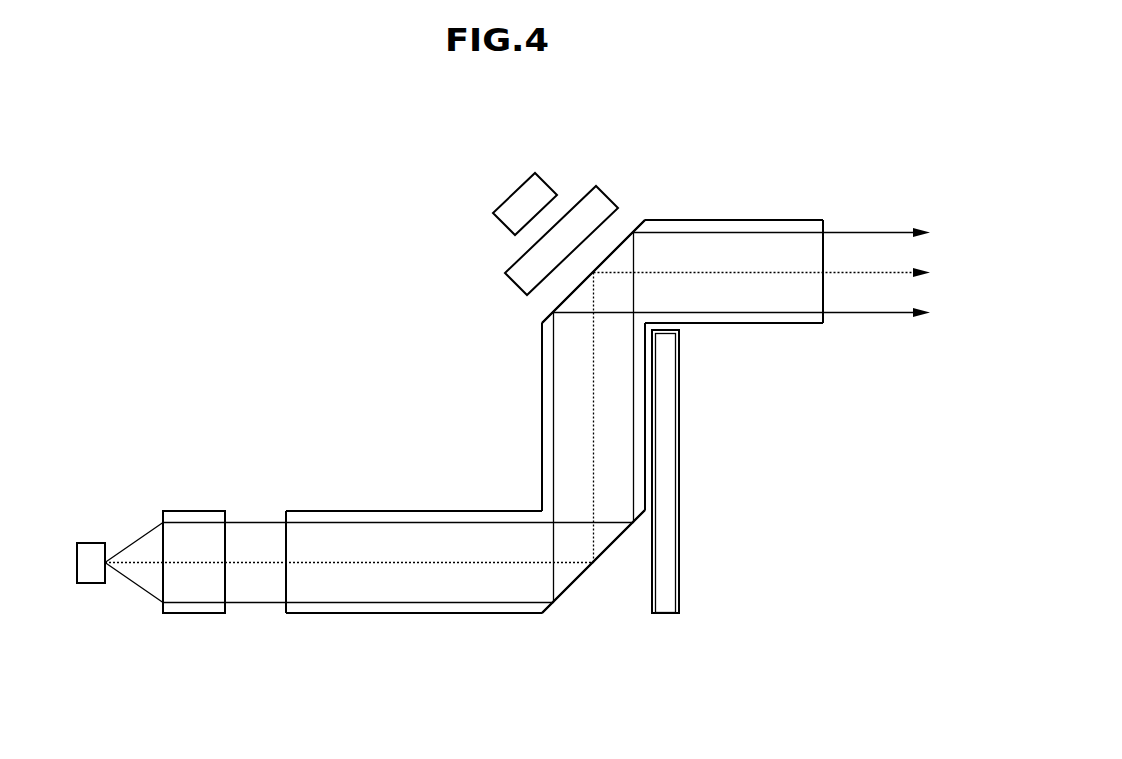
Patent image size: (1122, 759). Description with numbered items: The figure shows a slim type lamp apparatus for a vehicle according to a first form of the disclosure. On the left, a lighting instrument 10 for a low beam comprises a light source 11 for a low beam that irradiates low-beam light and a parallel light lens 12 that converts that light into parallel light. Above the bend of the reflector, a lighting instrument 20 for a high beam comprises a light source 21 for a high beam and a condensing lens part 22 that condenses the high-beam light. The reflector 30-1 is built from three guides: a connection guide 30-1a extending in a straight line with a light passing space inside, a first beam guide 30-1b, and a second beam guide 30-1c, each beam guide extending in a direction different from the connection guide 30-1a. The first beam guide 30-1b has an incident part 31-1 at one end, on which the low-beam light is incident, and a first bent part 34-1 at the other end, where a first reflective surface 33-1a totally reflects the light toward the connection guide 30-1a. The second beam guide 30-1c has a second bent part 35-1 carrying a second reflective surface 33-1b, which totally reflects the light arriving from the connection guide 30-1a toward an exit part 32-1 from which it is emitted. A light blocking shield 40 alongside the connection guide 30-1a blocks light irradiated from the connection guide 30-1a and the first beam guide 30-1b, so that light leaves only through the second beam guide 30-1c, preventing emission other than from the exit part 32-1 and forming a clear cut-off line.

The lighting instrument for a low beam 10 is at (145, 501).
The light source for a low beam 11 is at (93, 543).
The parallel light lens 12 is at (194, 518).
The lighting instrument for a high beam 20 is at (491, 220).
The light source for a high beam 21 is at (510, 207).
The condensing lens part 22 is at (518, 240).
The reflector 30-1 is at (571, 417).
The connection guide 30-1a is at (613, 413).
The first beam guide 30-1b is at (435, 582).
The second beam guide 30-1c is at (723, 245).
The incident part 31-1 is at (287, 583).
The exit part 32-1 is at (823, 248).
The first reflective surface 33-1a is at (563, 595).
The second reflective surface 33-1b is at (566, 300).
The first bent part 34-1 is at (572, 545).
The second bent part 35-1 is at (612, 293).
The light blocking shield 40 is at (680, 498).